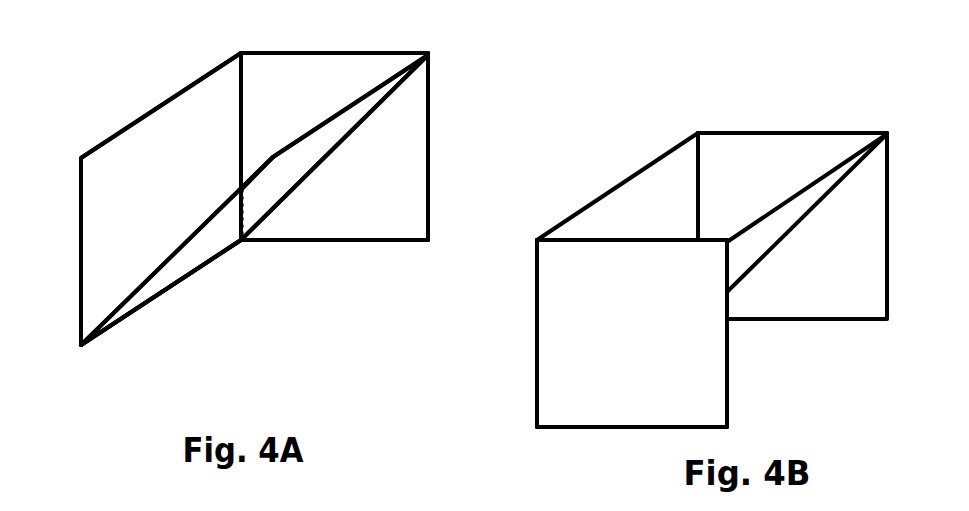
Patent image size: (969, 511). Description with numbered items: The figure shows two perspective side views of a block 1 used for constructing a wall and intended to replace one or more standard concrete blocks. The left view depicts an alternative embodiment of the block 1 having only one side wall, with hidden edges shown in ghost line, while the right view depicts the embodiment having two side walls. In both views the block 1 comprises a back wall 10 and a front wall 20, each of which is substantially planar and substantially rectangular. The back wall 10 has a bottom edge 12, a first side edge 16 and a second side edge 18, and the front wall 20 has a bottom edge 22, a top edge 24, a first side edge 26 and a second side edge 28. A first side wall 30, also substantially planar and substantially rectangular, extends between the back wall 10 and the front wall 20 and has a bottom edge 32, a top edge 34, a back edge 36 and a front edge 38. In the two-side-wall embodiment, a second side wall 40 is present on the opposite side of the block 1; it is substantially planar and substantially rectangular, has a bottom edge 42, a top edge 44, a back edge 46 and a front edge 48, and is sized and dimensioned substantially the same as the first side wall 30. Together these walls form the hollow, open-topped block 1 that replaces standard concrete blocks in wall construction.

In FIG. 4A, the block 1 is at (185, 88).
In FIG. 4B, the block 1 is at (817, 133).
In FIG. 4A, the back wall 10 is at (167, 157).
In FIG. 4B, the back wall 10 is at (660, 205).
In FIG. 4A, the bottom edge 12 is at (177, 283).
In FIG. 4A, the bottom edge 22 is at (173, 277).
In FIG. 4A, the front wall 20 is at (197, 250).
In FIG. 4B, the front wall 20 is at (758, 243).
In FIG. 4A, the top edge 24 is at (322, 122).
In FIG. 4A, the first side edge 26 is at (160, 257).
In FIG. 4A, the second side edge 28 is at (347, 143).
In FIG. 4A, the first side wall 30 is at (383, 198).
In FIG. 4B, the first side wall 30 is at (842, 233).
In FIG. 4A, the bottom edge 32 is at (343, 246).
In FIG. 4A, the top edge 34 is at (337, 49).
In FIG. 4A, the front edge 38 is at (430, 100).
In FIG. 4B, the second side edge 18 is at (740, 151).
In FIG. 4B, the back edge 36 is at (703, 175).
In FIG. 4B, the second side wall 40 is at (582, 323).
In FIG. 4B, the bottom edge 42 is at (580, 427).
In FIG. 4B, the top edge 44 is at (590, 240).
In FIG. 4B, the first side edge 16 is at (476, 333).
In FIG. 4B, the back edge 46 is at (537, 378).
In FIG. 4B, the front edge 48 is at (727, 378).